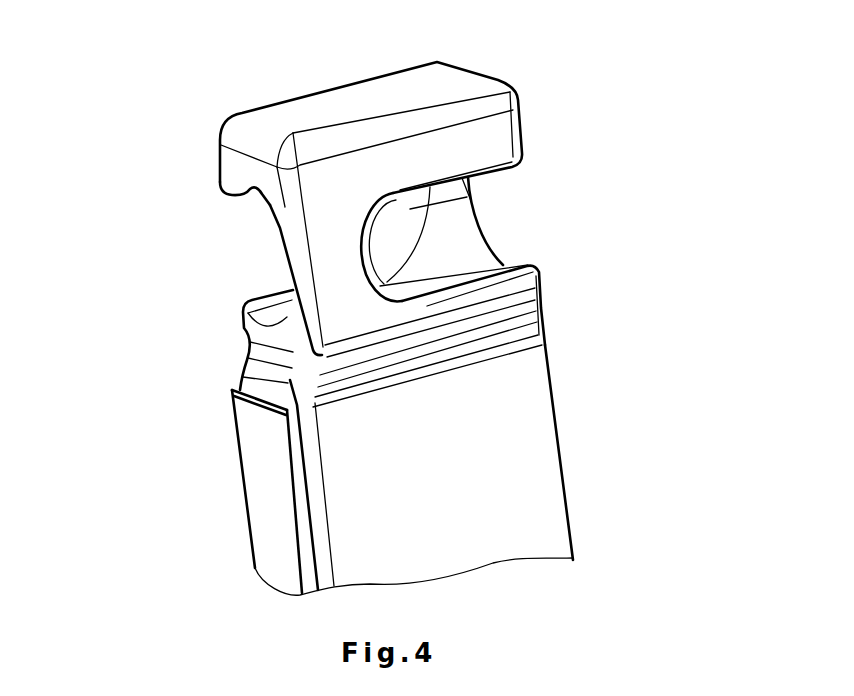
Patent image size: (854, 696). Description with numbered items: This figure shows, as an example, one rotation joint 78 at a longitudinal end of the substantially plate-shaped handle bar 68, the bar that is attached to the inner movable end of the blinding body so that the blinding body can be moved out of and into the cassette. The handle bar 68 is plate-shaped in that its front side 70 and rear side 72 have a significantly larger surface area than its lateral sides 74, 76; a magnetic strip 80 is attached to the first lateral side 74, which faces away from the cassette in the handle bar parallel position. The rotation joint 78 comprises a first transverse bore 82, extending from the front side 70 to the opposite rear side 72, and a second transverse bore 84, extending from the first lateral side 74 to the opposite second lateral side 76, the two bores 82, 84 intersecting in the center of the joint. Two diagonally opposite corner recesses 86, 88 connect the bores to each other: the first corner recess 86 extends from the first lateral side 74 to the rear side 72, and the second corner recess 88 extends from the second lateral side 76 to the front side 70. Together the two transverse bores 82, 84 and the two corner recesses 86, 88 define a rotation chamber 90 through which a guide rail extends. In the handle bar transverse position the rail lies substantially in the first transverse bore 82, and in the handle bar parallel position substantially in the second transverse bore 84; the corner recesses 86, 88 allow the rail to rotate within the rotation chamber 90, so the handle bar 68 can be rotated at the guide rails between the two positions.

The handle bar 68 is at (150, 100).
The front side 70 is at (463, 473).
The rear side 72 is at (225, 368).
The first lateral side 74 is at (240, 525).
The second lateral side 76 is at (570, 443).
The rotation joint 78 is at (555, 117).
The magnetic strip 80 is at (262, 463).
The first transverse bore 82 is at (420, 272).
The second transverse bore 84 is at (263, 255).
The first corner recess 86 is at (258, 239).
The second corner recess 88 is at (493, 230).
The rotation chamber 90 is at (390, 225).